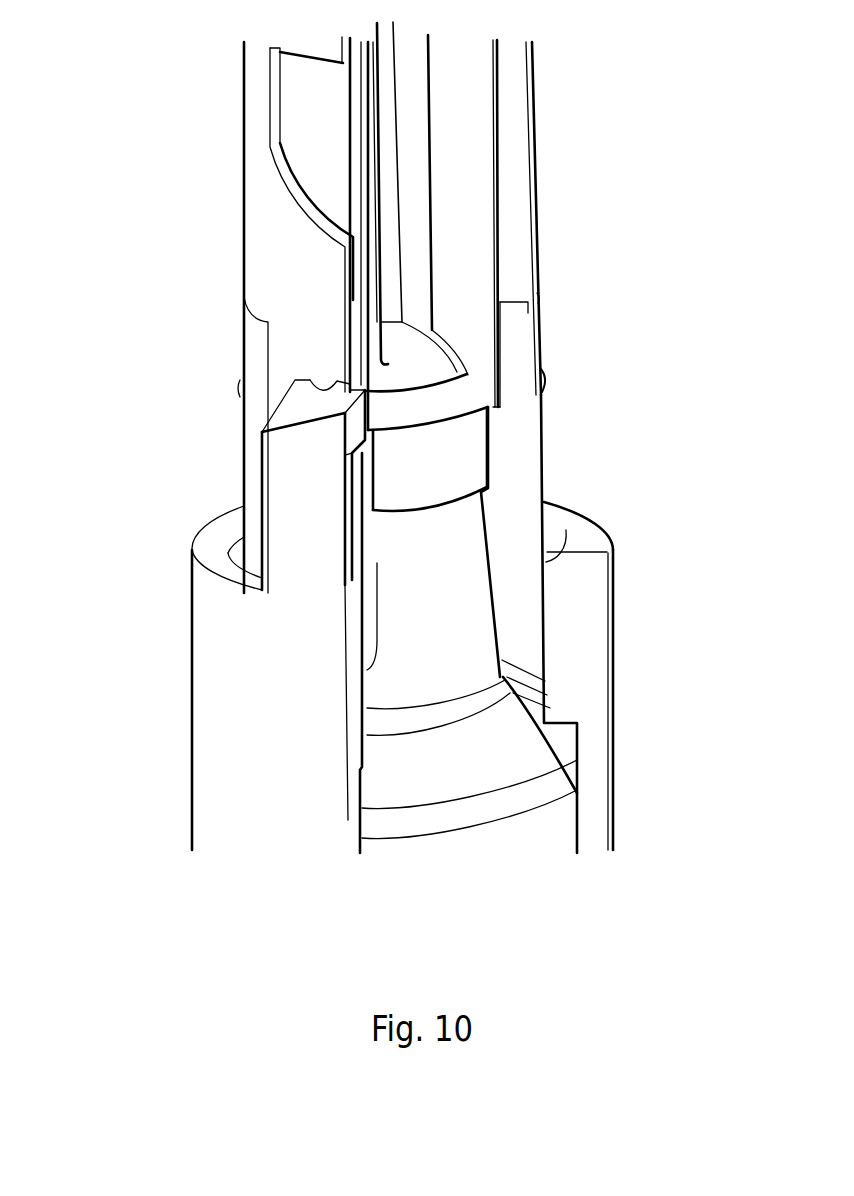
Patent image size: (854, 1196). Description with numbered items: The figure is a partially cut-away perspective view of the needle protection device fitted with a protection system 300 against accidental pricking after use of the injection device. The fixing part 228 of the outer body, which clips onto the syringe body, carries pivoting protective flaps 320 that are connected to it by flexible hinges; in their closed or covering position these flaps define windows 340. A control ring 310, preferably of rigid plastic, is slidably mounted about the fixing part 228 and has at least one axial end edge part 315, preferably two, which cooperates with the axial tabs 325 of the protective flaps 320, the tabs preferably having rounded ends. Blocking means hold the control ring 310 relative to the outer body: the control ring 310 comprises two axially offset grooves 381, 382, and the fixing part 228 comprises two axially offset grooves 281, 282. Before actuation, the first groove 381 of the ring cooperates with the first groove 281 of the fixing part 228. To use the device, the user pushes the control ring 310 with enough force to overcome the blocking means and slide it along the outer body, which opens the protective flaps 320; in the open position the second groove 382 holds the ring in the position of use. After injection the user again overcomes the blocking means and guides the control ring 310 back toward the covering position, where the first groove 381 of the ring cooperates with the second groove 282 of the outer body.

The protection system 300 is at (187, 700).
The control ring 310 is at (213, 625).
The axial end edge part 315 is at (320, 403).
The protective flaps 320 is at (255, 182).
The axial tabs 325 is at (333, 389).
The windows 340 is at (308, 110).
The fixing part 228 is at (513, 467).
The second groove of the outer body 282 is at (528, 388).
The first groove of the outer body 281 is at (541, 598).
The first groove of the control ring 381 is at (552, 589).
The second groove of the control ring 382 is at (553, 700).